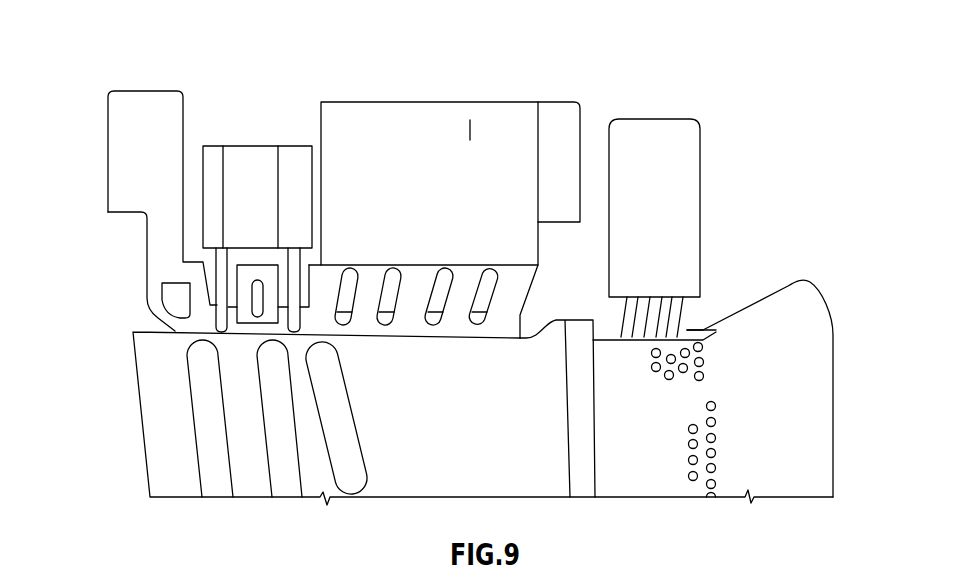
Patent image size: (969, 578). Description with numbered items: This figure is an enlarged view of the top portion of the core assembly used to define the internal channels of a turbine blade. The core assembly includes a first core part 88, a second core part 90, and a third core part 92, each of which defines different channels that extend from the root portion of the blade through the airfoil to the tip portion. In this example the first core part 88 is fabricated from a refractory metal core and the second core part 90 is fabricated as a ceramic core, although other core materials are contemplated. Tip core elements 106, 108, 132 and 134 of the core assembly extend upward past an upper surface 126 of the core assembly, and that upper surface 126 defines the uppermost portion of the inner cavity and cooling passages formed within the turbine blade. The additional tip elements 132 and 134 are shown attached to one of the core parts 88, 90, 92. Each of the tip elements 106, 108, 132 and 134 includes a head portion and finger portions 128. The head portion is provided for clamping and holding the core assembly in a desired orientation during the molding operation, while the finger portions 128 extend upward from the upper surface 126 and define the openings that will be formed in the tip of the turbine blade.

The first core part 88 is at (550, 350).
The second core part 90 is at (713, 371).
The third core part 92 is at (165, 448).
The tip core element 106 is at (725, 227).
The tip core element 108 is at (116, 236).
The upper surface 126 is at (718, 322).
The finger portions 128 is at (293, 258).
The tip element 132 is at (607, 102).
The tip element 134 is at (301, 120).